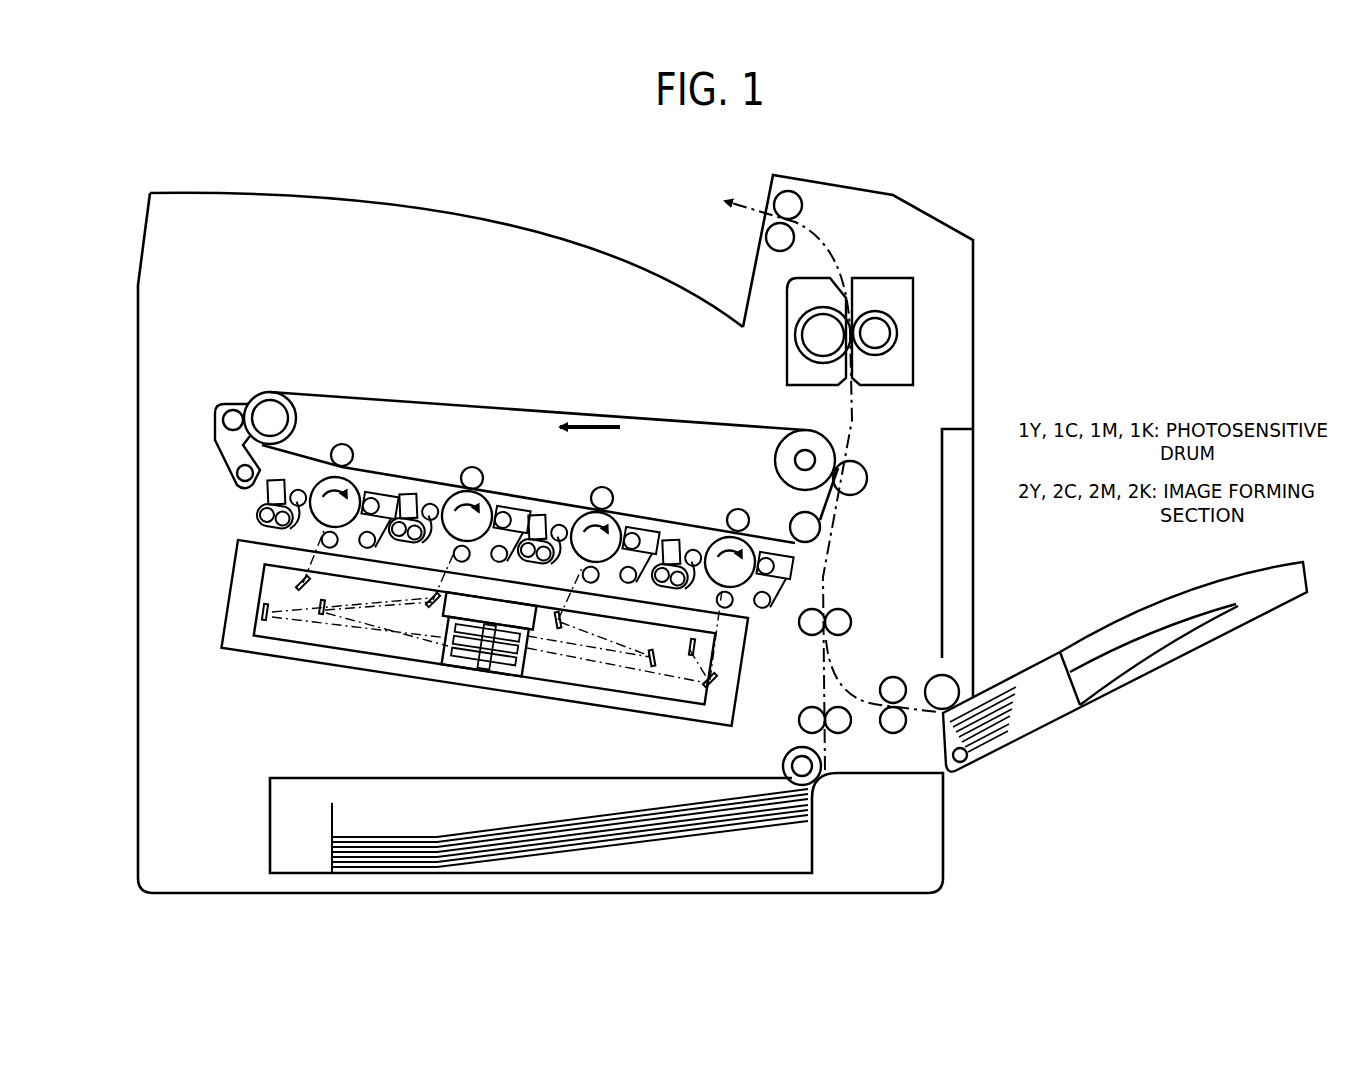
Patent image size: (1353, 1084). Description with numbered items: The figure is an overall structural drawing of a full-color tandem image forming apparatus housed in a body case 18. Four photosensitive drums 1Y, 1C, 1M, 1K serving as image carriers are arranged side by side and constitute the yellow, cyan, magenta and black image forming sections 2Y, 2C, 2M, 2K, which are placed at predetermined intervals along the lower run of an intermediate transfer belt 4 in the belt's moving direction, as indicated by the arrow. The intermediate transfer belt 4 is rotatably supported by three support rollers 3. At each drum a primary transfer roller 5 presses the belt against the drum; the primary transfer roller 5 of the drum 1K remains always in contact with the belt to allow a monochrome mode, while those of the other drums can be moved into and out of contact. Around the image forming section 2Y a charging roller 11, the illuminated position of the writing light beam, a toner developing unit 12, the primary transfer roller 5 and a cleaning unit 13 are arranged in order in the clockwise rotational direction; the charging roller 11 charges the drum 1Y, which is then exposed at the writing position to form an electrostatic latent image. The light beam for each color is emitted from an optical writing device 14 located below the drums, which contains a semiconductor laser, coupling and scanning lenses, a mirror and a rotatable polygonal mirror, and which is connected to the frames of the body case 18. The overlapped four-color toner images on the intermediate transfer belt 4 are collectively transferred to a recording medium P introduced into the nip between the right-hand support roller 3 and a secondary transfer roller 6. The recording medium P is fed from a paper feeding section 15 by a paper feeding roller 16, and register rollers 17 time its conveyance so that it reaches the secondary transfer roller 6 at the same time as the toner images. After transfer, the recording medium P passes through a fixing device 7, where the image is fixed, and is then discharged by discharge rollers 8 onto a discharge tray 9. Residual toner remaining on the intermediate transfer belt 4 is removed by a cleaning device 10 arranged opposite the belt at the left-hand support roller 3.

The photosensitive drum 1Y is at (326, 482).
The photosensitive drum 1C is at (457, 492).
The photosensitive drum 1M is at (585, 512).
The photosensitive drum 1K is at (720, 533).
The image forming section 2Y is at (323, 483).
The image forming section 2C is at (496, 481).
The image forming section 2M is at (623, 508).
The image forming section 2K is at (758, 527).
The support roller 3 is at (266, 406).
The intermediate transfer belt 4 is at (492, 403).
The primary transfer roller 5 is at (345, 445).
The secondary transfer roller 6 is at (855, 459).
The fixing device 7 is at (885, 285).
The discharge rollers 8 is at (803, 203).
The discharge tray 9 is at (552, 237).
The cleaning device 10 is at (227, 401).
The charging roller 11 is at (338, 548).
The toner developing unit 12 is at (263, 510).
The cleaning unit 13 is at (388, 483).
The optical writing device 14 is at (485, 627).
The paper feeding section 15 is at (703, 873).
The paper feeding roller 16 is at (793, 750).
The register rollers 17 is at (850, 616).
The body case 18 is at (140, 362).
The recording medium P is at (557, 850).